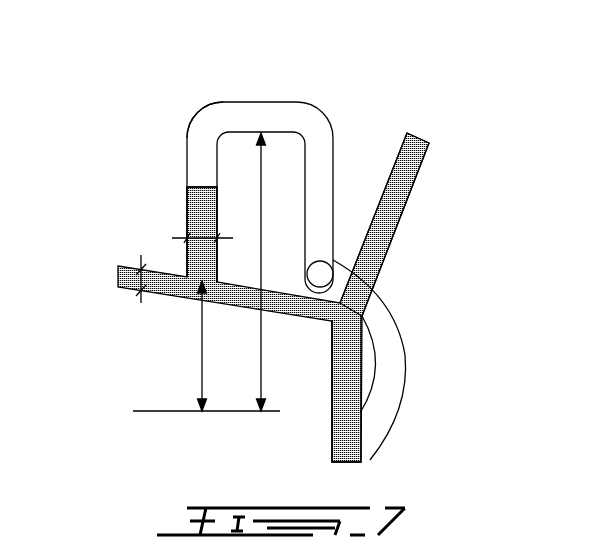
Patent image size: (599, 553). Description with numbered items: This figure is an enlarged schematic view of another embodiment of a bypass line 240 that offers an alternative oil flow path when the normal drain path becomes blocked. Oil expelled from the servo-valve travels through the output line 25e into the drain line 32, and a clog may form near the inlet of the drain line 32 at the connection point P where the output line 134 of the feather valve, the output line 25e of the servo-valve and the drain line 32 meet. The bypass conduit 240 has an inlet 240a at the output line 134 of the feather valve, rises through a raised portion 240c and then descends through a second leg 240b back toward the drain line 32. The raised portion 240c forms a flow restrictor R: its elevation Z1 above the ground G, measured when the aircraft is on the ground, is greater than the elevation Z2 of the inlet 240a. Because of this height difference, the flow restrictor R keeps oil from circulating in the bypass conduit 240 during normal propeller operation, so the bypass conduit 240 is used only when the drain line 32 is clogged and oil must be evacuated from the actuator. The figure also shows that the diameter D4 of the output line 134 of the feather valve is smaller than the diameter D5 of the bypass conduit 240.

The bypass line 240 is at (270, 148).
The inlet of the bypass conduit 240a is at (178, 262).
The second leg of clip 240b is at (318, 453).
The portion of the bypass conduit 240c is at (262, 102).
The output line of the servo-valve 25e is at (412, 199).
The output line of the feather valve 134 is at (168, 296).
The drain line 32 is at (332, 385).
The flow restrictor R is at (228, 94).
The elevation of the flow restrictor portion Z1 is at (262, 190).
The elevation of the inlet Z2 is at (200, 347).
The diameter of the output line D4 is at (137, 297).
The diameter of the bypass conduit D5 is at (178, 236).
The ground G is at (225, 412).
The connection point P is at (384, 319).